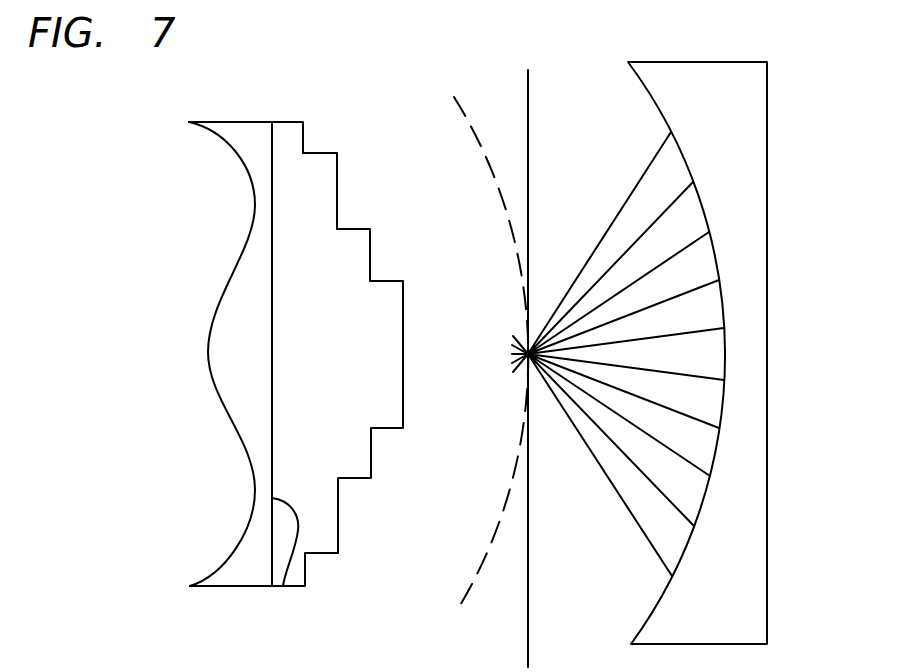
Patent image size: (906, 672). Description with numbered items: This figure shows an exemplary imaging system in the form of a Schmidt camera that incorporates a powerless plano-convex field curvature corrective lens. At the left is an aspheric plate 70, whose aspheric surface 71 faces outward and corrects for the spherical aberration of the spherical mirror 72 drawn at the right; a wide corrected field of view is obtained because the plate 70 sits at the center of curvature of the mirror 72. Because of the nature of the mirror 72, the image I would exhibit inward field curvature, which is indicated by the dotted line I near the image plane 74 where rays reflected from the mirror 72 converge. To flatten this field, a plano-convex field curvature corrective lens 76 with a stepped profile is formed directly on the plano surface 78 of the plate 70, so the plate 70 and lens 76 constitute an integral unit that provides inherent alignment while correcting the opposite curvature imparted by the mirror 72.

The aspheric plate 70 is at (240, 567).
The aspherical wavy surface 71 is at (209, 352).
The spherical mirror 72 is at (745, 552).
The image plane 74 is at (535, 620).
The plano-convex field curvature corrective lens 76 is at (296, 569).
The plano surface 78 is at (278, 586).
The image I is at (462, 600).